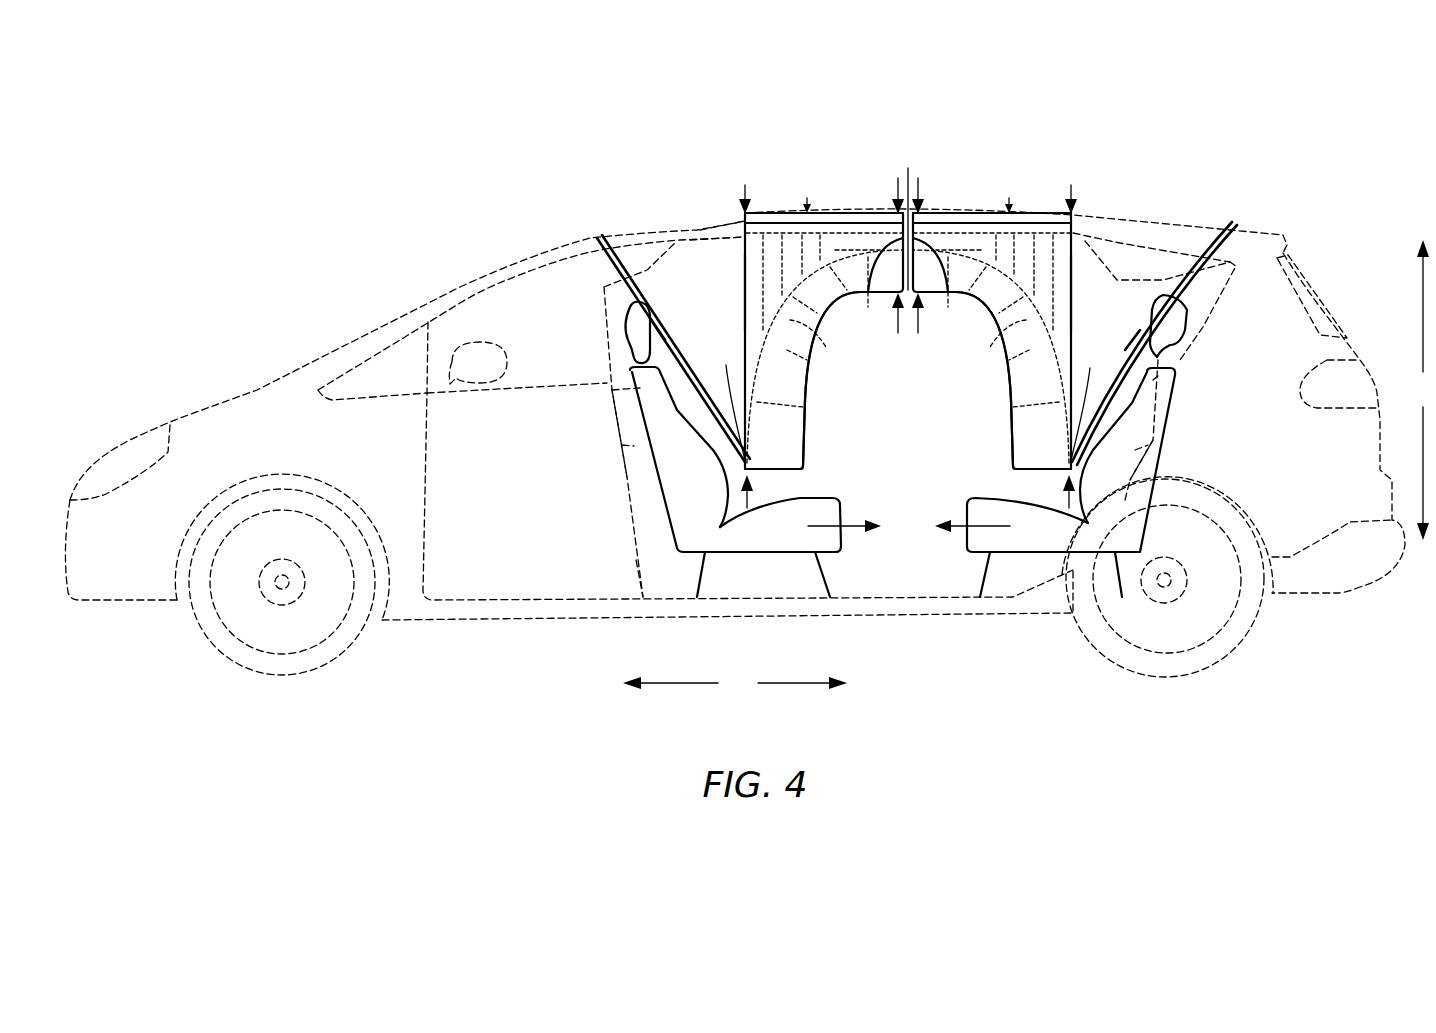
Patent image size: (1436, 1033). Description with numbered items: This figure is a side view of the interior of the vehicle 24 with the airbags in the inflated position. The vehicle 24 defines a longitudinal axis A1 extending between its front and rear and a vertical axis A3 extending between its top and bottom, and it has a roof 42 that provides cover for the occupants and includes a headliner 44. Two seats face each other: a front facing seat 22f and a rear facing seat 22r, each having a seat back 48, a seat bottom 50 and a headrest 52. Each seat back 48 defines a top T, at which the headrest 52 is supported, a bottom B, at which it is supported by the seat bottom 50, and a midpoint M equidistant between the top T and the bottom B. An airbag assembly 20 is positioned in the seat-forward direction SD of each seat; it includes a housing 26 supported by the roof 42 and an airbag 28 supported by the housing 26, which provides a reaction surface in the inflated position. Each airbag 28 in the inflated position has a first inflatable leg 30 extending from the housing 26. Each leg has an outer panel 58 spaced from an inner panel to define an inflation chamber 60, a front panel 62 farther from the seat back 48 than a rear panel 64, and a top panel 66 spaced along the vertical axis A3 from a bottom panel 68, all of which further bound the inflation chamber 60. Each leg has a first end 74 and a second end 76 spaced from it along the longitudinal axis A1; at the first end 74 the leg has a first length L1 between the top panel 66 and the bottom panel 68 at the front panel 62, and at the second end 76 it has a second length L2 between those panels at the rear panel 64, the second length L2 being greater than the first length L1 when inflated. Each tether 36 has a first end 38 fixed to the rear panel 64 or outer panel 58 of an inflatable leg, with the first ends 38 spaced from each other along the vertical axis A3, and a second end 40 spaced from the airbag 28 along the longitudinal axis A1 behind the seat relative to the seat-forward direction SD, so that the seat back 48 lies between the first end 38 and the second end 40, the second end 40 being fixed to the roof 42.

The airbag assembly 20 is at (807, 205).
The rear facing seat 22r is at (670, 470).
The front facing seat 22f is at (1142, 412).
The vehicle 24 is at (258, 390).
The housing 26 is at (833, 210).
The airbag 28 is at (855, 232).
The first inflatable leg 30 is at (808, 373).
The tether 36 is at (675, 343).
The first end 38 is at (726, 365).
The second end 40 is at (597, 238).
The roof 42 is at (720, 226).
The headliner 44 is at (697, 238).
The seat back 48 is at (667, 433).
The seat bottom 50 is at (833, 543).
The headrest 52 is at (630, 330).
The outer panel 58 is at (795, 257).
The inflation chamber 60 is at (828, 348).
The front panel 62 is at (908, 215).
The rear panel 64 is at (743, 297).
The top panel 66 is at (818, 212).
The bottom panel 68 is at (807, 413).
The first end 74 is at (870, 292).
The second end 76 is at (745, 273).
The top T is at (640, 388).
The midpoint M is at (673, 467).
The bottom B is at (680, 517).
The first length L1 is at (908, 324).
The second length L2 is at (743, 495).
The seat-forward direction SD is at (909, 513).
The longitudinal axis A1 is at (735, 683).
The vertical axis A3 is at (1419, 390).